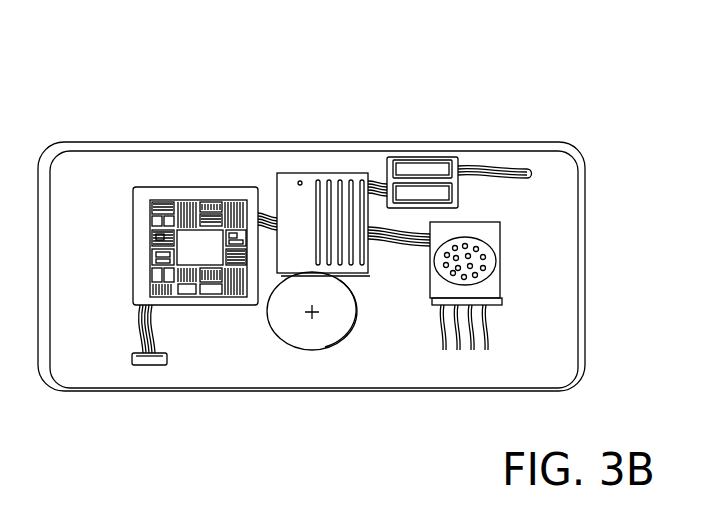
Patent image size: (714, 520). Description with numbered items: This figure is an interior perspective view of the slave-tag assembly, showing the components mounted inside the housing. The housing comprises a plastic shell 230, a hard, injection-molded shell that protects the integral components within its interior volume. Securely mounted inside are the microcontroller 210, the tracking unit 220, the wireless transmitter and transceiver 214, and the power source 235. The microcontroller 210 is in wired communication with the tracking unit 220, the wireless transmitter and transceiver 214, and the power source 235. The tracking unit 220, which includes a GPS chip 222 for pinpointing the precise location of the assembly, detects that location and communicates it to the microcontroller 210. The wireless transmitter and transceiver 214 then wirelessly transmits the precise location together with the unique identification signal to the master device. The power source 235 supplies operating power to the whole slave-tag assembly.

The plastic shell 230 is at (58, 140).
The microcontroller 210 is at (177, 195).
The wireless transmitter and transceiver 214 is at (290, 185).
The GPS chip 222 is at (428, 160).
The power source 235 is at (480, 246).
The tracking unit 220 is at (330, 347).